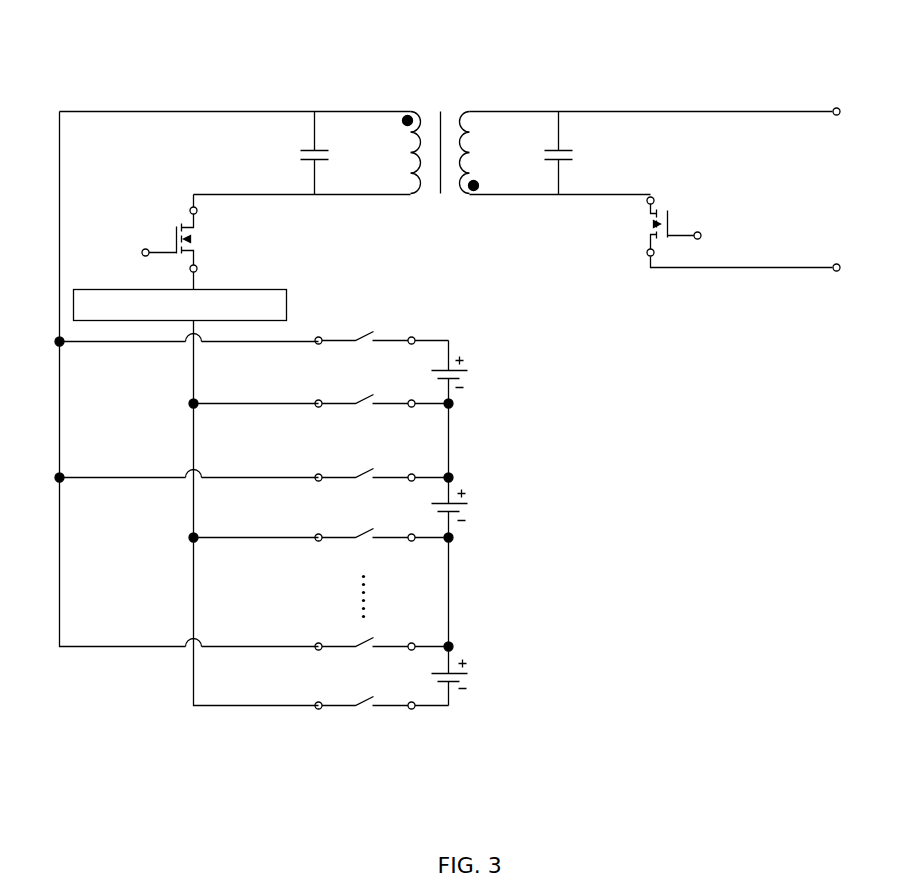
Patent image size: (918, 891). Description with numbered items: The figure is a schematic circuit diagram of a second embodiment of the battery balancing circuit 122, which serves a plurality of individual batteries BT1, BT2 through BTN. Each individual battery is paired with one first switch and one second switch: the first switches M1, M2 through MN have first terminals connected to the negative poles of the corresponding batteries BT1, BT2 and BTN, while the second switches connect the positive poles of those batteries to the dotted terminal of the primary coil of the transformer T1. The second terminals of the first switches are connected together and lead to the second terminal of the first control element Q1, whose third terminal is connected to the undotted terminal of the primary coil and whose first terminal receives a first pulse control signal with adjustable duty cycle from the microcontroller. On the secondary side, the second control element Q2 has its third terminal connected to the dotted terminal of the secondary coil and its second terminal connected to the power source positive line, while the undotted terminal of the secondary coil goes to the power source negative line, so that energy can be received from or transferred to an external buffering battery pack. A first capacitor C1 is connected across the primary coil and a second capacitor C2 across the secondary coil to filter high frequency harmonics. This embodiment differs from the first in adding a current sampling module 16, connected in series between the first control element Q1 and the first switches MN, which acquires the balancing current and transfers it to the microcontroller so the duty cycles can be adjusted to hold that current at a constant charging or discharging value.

The battery balancing circuit 122 is at (444, 31).
The current sampling module 16 is at (286, 289).
The transformer T1 is at (456, 140).
The first capacitor C1 is at (330, 153).
The second capacitor C2 is at (576, 153).
The first control element Q1 is at (170, 241).
The second control element Q2 is at (679, 228).
The individual battery BT1 is at (468, 372).
The individual battery BT2 is at (469, 505).
The individual battery BTN is at (470, 674).
The first switch M1 is at (374, 412).
The first switch M2 is at (374, 546).
The first switch MN is at (373, 713).